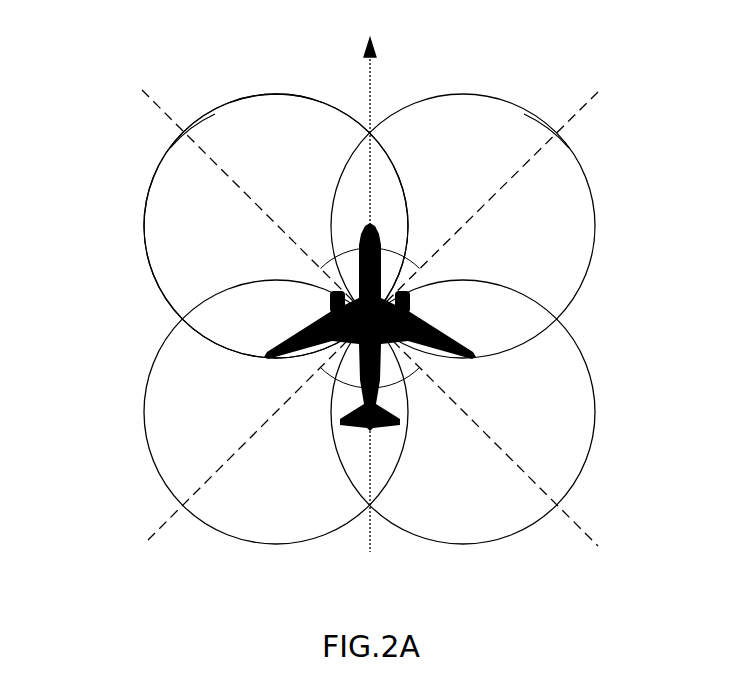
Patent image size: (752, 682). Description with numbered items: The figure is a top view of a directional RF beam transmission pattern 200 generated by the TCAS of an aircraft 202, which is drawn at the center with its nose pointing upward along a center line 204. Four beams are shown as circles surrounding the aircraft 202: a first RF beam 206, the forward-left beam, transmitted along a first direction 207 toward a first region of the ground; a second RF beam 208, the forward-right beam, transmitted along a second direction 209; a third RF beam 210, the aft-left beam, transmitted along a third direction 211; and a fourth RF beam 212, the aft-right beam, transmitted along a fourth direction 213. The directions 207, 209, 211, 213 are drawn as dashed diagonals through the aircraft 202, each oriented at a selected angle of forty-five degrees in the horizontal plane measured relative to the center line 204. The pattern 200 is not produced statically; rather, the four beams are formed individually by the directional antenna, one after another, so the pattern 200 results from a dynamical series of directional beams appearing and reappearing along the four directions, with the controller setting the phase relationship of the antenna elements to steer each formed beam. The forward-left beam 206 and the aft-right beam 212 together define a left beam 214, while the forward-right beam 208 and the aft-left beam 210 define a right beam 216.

The transmission pattern 200 is at (168, 56).
The aircraft 202 is at (441, 324).
The center line 204 is at (373, 83).
The first RF beam 206 is at (276, 226).
The first direction 207 is at (247, 194).
The second RF beam 208 is at (463, 226).
The second direction 209 is at (493, 194).
The third RF beam 210 is at (276, 412).
The third direction 211 is at (247, 443).
The fourth RF beam 212 is at (463, 412).
The fourth direction 213 is at (493, 442).
The left beam 214 is at (154, 136).
The right beam 216 is at (587, 136).